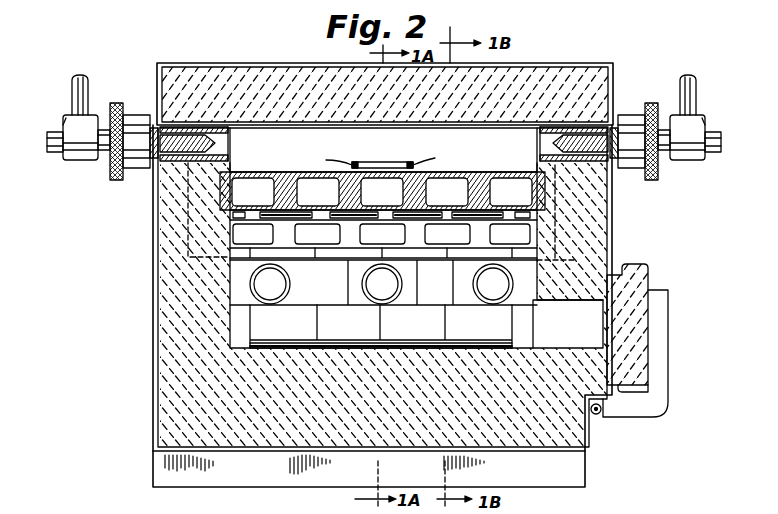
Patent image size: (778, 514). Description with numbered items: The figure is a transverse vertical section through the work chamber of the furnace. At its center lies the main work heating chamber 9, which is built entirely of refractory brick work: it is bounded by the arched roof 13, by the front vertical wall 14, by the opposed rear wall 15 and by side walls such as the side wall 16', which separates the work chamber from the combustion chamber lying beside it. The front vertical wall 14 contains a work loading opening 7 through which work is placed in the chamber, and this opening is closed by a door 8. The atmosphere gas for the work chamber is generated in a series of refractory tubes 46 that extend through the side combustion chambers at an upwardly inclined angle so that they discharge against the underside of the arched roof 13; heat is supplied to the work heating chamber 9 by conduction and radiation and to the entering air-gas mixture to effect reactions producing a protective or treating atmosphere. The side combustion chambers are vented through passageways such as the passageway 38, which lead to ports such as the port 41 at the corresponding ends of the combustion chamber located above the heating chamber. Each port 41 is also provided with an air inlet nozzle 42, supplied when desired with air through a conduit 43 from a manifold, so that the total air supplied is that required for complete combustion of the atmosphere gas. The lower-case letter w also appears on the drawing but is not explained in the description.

The work loading opening 7 is at (545, 314).
The door 8 is at (641, 284).
The main work heating chamber 9 is at (440, 292).
The arched roof 13 is at (297, 171).
The front vertical wall 14 is at (598, 222).
The rear wall 15 is at (176, 290).
The side wall 16' is at (350, 255).
The passageway 38 is at (188, 236).
The port 41 is at (540, 141).
The air inlet nozzle 42 is at (162, 165).
The conduit 43 is at (72, 92).
The refractory tube 46 is at (362, 273).
The bottom plate w is at (417, 339).